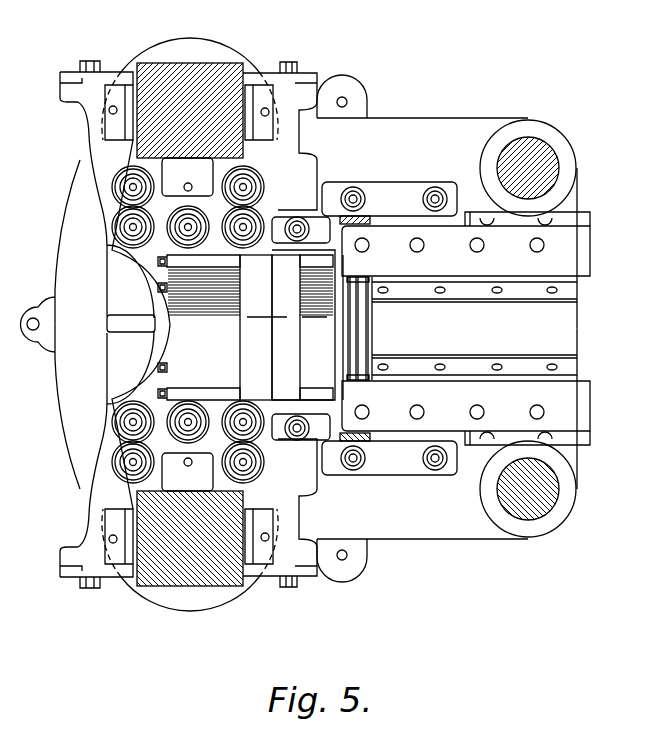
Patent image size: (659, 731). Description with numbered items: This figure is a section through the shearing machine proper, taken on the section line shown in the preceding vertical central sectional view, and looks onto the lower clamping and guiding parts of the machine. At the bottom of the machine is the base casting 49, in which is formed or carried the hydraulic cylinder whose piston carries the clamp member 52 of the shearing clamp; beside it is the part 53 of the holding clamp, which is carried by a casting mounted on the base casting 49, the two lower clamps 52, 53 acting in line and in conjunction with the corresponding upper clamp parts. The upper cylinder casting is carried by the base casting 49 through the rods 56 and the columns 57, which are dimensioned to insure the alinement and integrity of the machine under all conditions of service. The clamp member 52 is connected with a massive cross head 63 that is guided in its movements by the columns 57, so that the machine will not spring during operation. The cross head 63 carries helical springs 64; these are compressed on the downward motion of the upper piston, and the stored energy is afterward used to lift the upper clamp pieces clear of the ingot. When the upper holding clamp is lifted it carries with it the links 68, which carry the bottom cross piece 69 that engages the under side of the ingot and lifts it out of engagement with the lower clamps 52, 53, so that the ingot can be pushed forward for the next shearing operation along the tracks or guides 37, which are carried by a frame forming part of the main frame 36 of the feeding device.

The main frame 36 is at (580, 252).
The tracks or guides 37 is at (478, 367).
The base casting 49 is at (405, 130).
The clamp member 52 is at (247, 340).
The holding clamp part 53 is at (293, 328).
The rods 56 is at (552, 170).
The columns 57 is at (211, 74).
The cross head 63 is at (102, 170).
The springs 64 is at (115, 230).
The links 68 is at (367, 220).
The bottom cross piece 69 is at (358, 328).